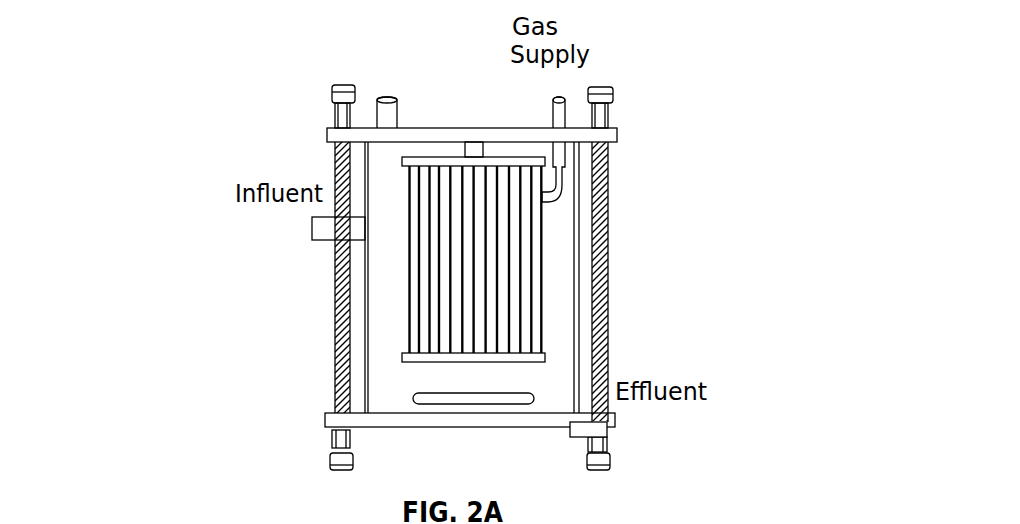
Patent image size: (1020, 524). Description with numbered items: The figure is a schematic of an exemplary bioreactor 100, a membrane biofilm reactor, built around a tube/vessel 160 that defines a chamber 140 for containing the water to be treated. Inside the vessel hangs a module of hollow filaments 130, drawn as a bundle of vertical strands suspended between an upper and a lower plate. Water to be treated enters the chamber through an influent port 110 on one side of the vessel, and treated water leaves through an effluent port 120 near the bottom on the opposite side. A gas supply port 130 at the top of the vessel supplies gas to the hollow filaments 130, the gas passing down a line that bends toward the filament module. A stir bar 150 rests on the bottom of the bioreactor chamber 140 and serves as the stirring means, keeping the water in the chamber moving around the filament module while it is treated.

The bioreactor 100 is at (310, 72).
The influent port 110 is at (323, 228).
The effluent port 120 is at (605, 430).
The hollow filaments 130 is at (558, 115).
The chamber 140 is at (560, 210).
The stir bar 150 is at (458, 402).
The tube/vessel 160 is at (605, 315).